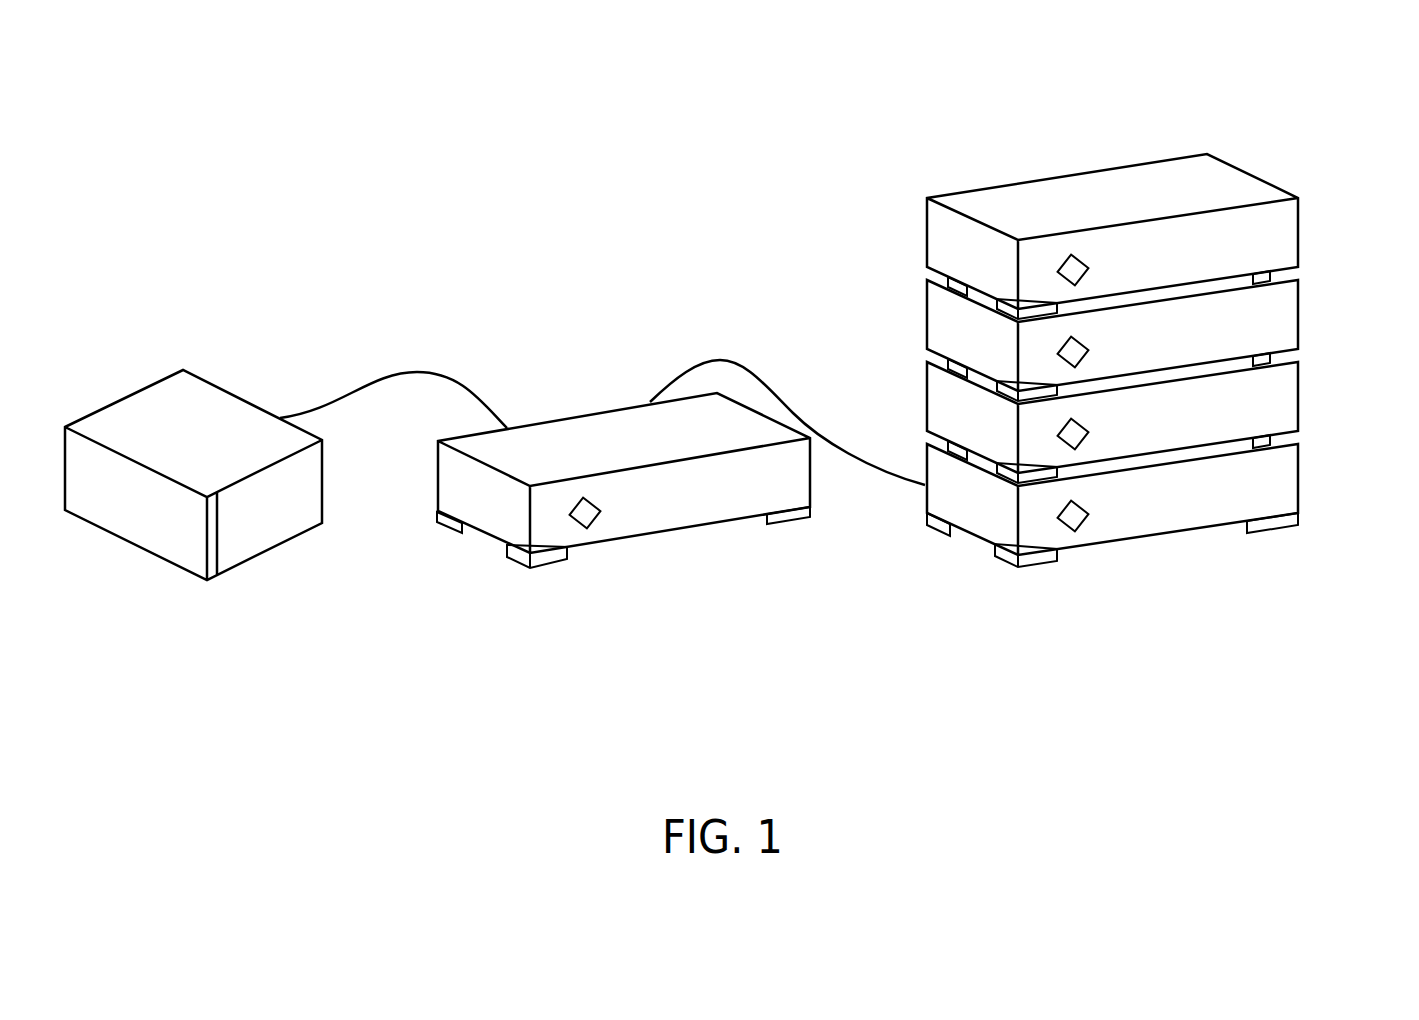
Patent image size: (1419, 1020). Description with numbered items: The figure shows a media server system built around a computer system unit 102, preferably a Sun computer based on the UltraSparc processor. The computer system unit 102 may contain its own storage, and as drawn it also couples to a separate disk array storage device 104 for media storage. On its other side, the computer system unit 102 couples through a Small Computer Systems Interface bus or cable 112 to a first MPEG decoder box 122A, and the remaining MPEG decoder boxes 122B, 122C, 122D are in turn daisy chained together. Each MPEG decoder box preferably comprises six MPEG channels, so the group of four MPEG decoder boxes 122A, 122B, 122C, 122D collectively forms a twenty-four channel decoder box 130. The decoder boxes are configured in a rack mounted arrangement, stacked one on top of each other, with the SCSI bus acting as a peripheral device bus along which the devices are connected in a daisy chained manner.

The computer system unit 102 is at (672, 533).
The disk array storage device 104 is at (255, 558).
The SCSI bus or cable 112 is at (695, 370).
The MPEG decoder box 122A is at (1298, 473).
The MPEG decoder box 122B is at (1298, 392).
The MPEG decoder box 122C is at (1298, 308).
The MPEG decoder box 122D is at (1298, 228).
The 24 channel decoder box 130 is at (1100, 332).